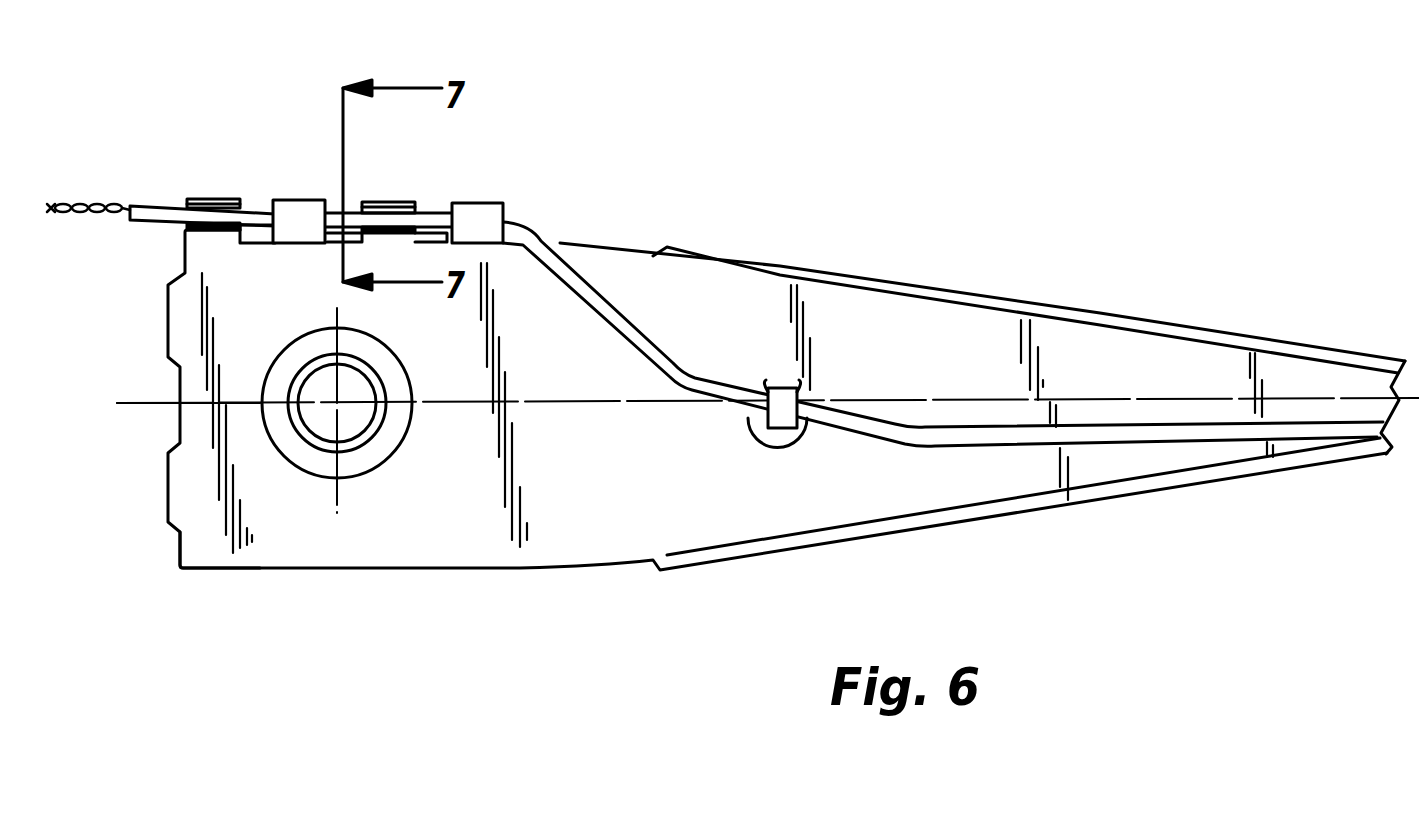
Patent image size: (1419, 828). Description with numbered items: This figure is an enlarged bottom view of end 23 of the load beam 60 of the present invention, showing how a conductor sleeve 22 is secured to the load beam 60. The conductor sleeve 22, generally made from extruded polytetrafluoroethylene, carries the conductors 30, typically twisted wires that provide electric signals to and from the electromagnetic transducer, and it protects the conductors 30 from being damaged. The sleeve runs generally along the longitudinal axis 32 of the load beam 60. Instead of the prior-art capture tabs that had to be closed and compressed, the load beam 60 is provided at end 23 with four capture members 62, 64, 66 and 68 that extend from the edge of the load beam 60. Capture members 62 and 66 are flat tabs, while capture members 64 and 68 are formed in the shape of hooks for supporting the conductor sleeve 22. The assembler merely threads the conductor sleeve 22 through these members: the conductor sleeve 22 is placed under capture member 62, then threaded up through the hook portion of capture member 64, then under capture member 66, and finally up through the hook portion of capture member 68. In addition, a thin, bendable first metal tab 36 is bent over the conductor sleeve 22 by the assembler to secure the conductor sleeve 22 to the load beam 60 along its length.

The conductor sleeve 22 is at (143, 202).
The conductors 30 is at (68, 212).
The longitudinal axis 32 is at (137, 402).
The end 23 is at (208, 547).
The load beam 60 is at (617, 493).
The first metal tab 36 is at (783, 417).
The capture member 62 is at (490, 202).
The capture member 64 is at (398, 202).
The capture member 66 is at (307, 200).
The capture member 68 is at (227, 199).